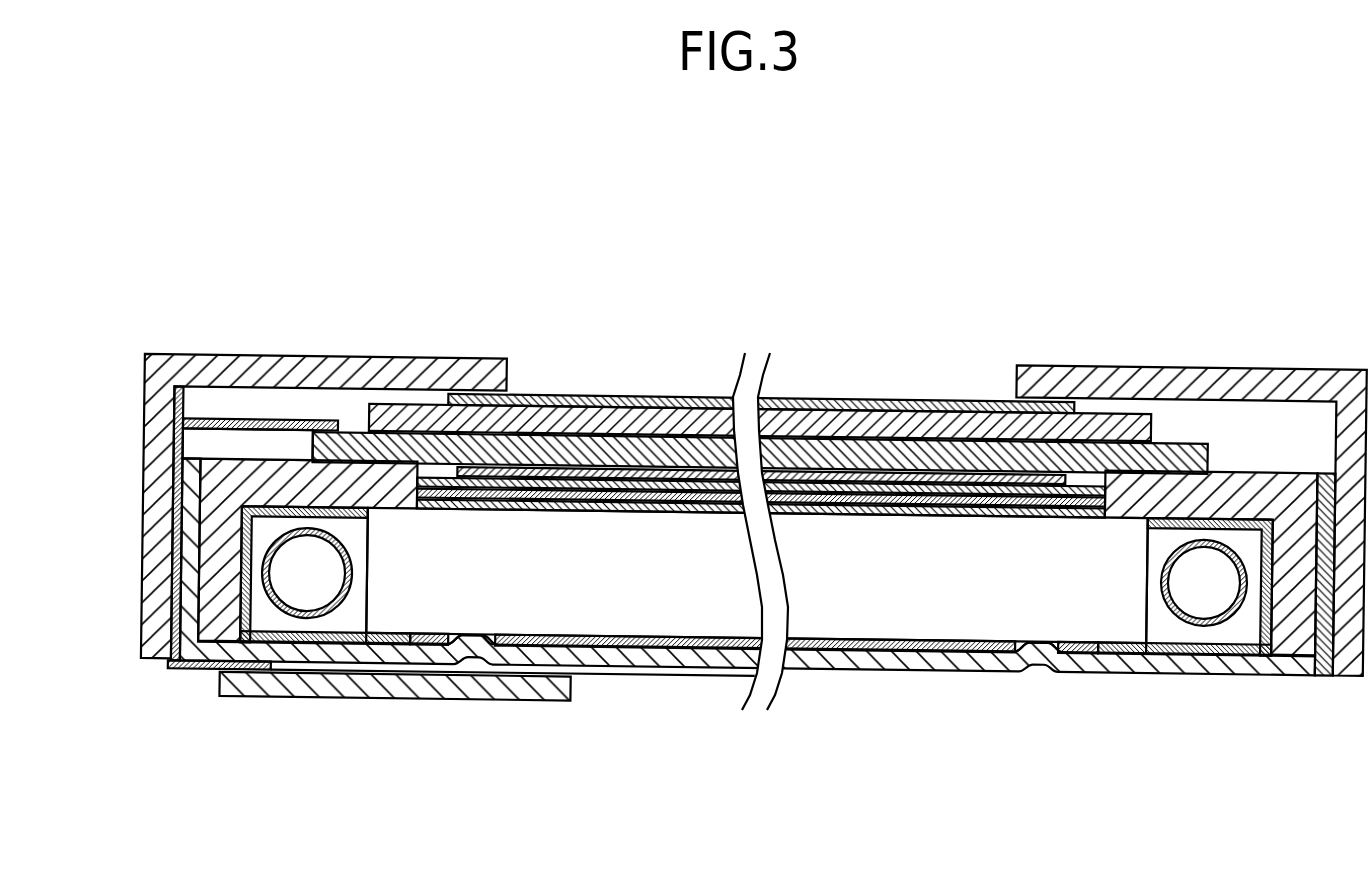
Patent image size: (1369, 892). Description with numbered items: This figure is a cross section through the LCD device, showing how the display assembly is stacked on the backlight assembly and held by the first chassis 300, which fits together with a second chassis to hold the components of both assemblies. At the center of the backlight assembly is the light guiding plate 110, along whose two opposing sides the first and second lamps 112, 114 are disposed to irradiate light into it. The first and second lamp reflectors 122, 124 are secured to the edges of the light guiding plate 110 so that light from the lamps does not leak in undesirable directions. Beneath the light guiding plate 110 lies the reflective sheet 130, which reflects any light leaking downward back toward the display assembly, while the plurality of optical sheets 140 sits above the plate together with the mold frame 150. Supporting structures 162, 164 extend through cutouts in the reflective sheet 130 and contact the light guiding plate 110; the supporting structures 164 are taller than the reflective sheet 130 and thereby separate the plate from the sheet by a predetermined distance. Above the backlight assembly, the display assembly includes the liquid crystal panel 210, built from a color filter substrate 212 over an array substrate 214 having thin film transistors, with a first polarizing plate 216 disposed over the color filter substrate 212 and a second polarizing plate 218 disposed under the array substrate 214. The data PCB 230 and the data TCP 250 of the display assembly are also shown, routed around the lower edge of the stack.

The light guiding plate 110 is at (883, 617).
The first lamp 112 is at (1237, 623).
The second lamp 114 is at (283, 620).
The first lamp reflector 122 is at (1168, 658).
The second lamp reflector 124 is at (330, 644).
The reflective sheet 130 is at (550, 660).
The optical sheets 140 is at (594, 510).
The mold frame 150 is at (1313, 644).
The supporting structure 162 is at (470, 657).
The supporting structure 164 is at (1038, 674).
The liquid crystal panel 210 is at (695, 363).
The color filter substrate 212 is at (597, 393).
The array substrate 214 is at (649, 393).
The first polarizing plate 216 is at (545, 393).
The second polarizing plate 218 is at (520, 272).
The data PCB 230 is at (402, 688).
The data TCP 250 is at (203, 671).
The first chassis 300 is at (322, 377).